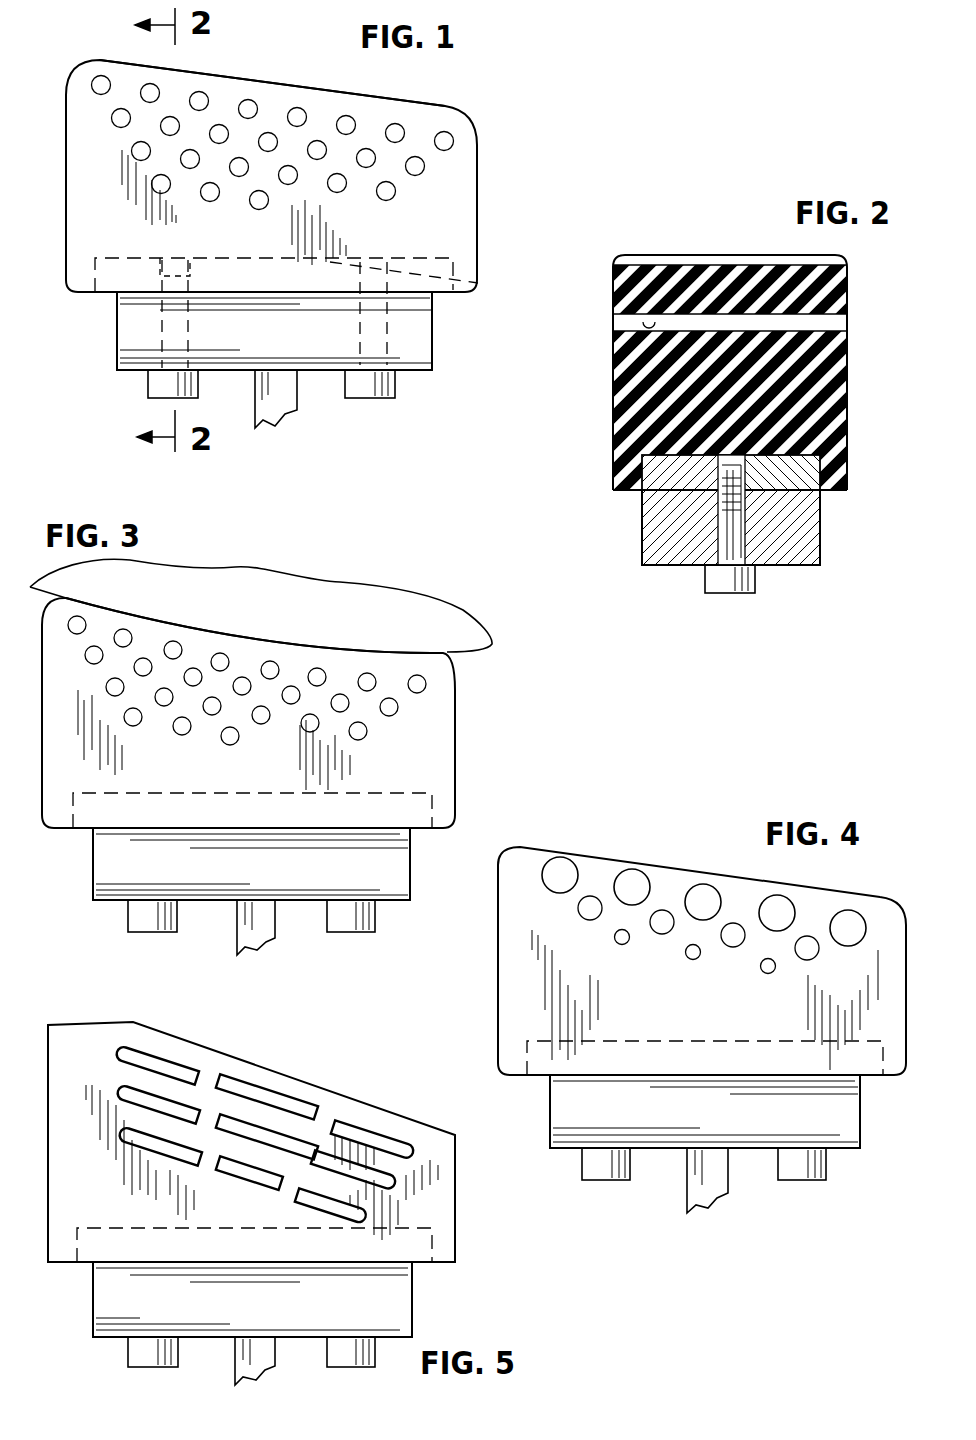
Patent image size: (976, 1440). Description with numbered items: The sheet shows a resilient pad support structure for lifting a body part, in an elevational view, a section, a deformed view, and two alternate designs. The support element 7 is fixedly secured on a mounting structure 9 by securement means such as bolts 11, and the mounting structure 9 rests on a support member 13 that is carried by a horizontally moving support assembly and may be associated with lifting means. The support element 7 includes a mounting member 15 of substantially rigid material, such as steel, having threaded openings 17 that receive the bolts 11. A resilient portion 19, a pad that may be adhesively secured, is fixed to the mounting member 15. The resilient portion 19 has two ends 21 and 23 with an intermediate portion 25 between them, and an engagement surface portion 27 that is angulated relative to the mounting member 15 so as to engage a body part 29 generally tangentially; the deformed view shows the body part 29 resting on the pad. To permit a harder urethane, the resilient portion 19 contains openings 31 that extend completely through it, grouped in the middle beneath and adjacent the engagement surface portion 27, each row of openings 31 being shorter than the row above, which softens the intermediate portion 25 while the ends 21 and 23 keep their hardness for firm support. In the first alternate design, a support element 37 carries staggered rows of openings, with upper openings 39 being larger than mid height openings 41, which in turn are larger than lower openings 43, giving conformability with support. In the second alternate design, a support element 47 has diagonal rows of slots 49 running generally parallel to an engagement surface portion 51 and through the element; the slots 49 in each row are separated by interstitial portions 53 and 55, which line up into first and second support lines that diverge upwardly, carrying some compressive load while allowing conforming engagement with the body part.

In FIG. 1, the support element 7 is at (293, 222).
In FIG. 1, the mounting structure 9 is at (420, 338).
In FIG. 2, the mounting structure 9 is at (810, 525).
In FIG. 3, the mounting structure 9 is at (105, 880).
In FIG. 4, the mounting structure 9 is at (565, 1135).
In FIG. 5, the mounting structure 9 is at (400, 1290).
In FIG. 1, the bolts 11 is at (165, 383).
In FIG. 2, the bolts 11 is at (752, 580).
In FIG. 3, the bolts 11 is at (135, 915).
In FIG. 4, the bolts 11 is at (790, 1182).
In FIG. 5, the bolts 11 is at (140, 1355).
In FIG. 1, the support member 13 is at (297, 402).
In FIG. 3, the support member 13 is at (275, 928).
In FIG. 4, the support member 13 is at (712, 1175).
In FIG. 5, the support member 13 is at (250, 1365).
In FIG. 1, the mounting member 15 is at (472, 258).
In FIG. 2, the mounting member 15 is at (660, 472).
In FIG. 3, the mounting member 15 is at (432, 795).
In FIG. 4, the mounting member 15 is at (535, 1068).
In FIG. 5, the mounting member 15 is at (80, 1265).
In FIG. 1, the threaded openings 17 is at (480, 284).
In FIG. 2, the threaded openings 17 is at (745, 450).
In FIG. 1, the resilient portion 19 is at (450, 215).
In FIG. 2, the resilient portion 19 is at (848, 348).
In FIG. 3, the resilient portion 19 is at (445, 680).
In FIG. 1, the end 21 is at (80, 185).
In FIG. 3, the end 21 is at (55, 760).
In FIG. 1, the end 23 is at (470, 200).
In FIG. 3, the end 23 is at (440, 723).
In FIG. 1, the intermediate portion 25 is at (285, 150).
In FIG. 3, the intermediate portion 25 is at (300, 780).
In FIG. 1, the engagement surface portion 27 is at (310, 88).
In FIG. 2, the engagement surface portion 27 is at (727, 262).
In FIG. 3, the engagement surface portion 27 is at (288, 640).
In FIG. 3, the body part 29 is at (240, 585).
In FIG. 1, the openings 31 is at (151, 83).
In FIG. 2, the openings 31 is at (649, 320).
In FIG. 3, the openings 31 is at (220, 660).
In FIG. 4, the support element 37 is at (500, 965).
In FIG. 4, the upper openings 39 is at (703, 900).
In FIG. 4, the mid height openings 41 is at (662, 922).
In FIG. 4, the lower openings 43 is at (622, 937).
In FIG. 5, the support element 47 is at (70, 1052).
In FIG. 5, the slots 49 is at (146, 1093).
In FIG. 5, the engagement surface portion 51 is at (350, 1097).
In FIG. 5, the interstitial portions 53 is at (207, 1075).
In FIG. 5, the interstitial portions 55 is at (323, 1117).